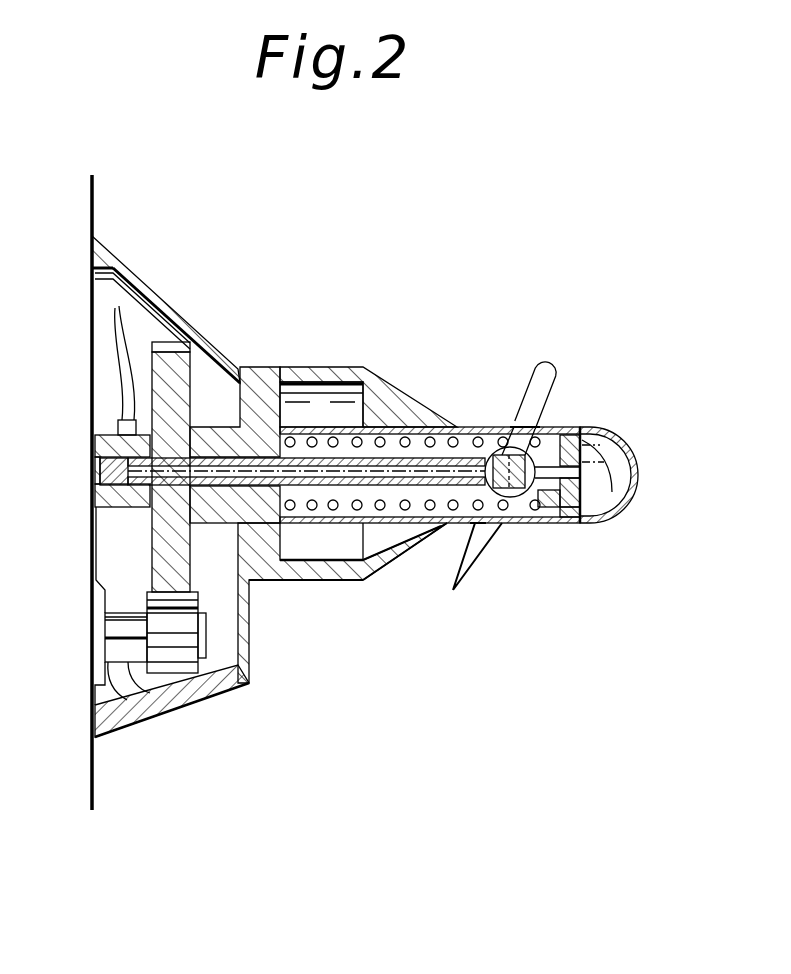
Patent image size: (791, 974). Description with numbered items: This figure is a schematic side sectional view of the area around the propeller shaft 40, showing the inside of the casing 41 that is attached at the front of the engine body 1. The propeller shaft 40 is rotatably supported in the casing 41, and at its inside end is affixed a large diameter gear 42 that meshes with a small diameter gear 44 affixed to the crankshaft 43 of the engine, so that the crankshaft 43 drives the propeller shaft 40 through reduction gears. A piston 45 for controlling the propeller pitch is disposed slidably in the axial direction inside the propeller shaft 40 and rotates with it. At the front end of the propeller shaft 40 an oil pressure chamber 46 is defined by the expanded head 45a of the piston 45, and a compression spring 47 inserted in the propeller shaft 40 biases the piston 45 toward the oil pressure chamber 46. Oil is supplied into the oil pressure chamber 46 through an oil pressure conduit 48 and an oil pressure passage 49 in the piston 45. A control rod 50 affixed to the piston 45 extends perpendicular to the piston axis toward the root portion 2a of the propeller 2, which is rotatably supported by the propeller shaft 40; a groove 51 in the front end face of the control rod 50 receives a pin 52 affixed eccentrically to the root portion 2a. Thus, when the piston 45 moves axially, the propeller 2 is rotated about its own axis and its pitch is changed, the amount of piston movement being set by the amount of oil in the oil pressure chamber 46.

The engine body 1 is at (94, 215).
The propeller 2 is at (548, 377).
The root portion 2a is at (497, 428).
The propeller shaft 40 is at (467, 427).
The casing 41 is at (251, 366).
The large diameter gear 42 is at (168, 317).
The crankshaft 43 is at (125, 660).
The small diameter gear 44 is at (177, 675).
The piston 45 is at (548, 510).
The expanded head 45a is at (568, 524).
The oil pressure chamber 46 is at (615, 478).
The compression spring 47 is at (430, 425).
The oil pressure conduit 48 is at (113, 354).
The oil pressure passage 49 is at (315, 500).
The control rod 50 is at (478, 524).
The groove 51 is at (500, 524).
The pin 52 is at (540, 421).